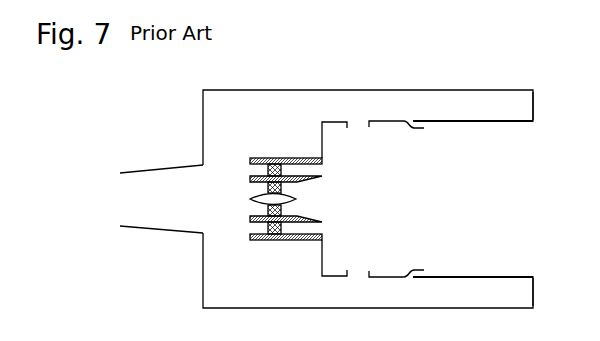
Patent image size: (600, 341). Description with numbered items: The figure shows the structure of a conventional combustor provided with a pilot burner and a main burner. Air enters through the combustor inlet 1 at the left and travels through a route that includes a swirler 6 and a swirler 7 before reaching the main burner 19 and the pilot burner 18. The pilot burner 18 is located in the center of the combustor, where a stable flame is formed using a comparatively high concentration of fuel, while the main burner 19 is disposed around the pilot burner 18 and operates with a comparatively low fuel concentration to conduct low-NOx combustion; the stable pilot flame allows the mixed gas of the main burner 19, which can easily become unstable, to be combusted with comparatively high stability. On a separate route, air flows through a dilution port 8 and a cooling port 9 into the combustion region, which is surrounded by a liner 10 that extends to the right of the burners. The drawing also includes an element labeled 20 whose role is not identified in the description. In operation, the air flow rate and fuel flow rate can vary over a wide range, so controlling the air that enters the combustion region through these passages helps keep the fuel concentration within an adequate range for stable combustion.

The combustor inlet 1 is at (161, 199).
The swirler 6 is at (256, 177).
The swirler 7 is at (250, 199).
The dilution port 8 is at (358, 120).
The cooling port 9 is at (409, 119).
The liner 10 is at (468, 120).
The pilot burner 18 is at (317, 197).
The main burner 19 is at (321, 177).
The end block 20 is at (512, 102).